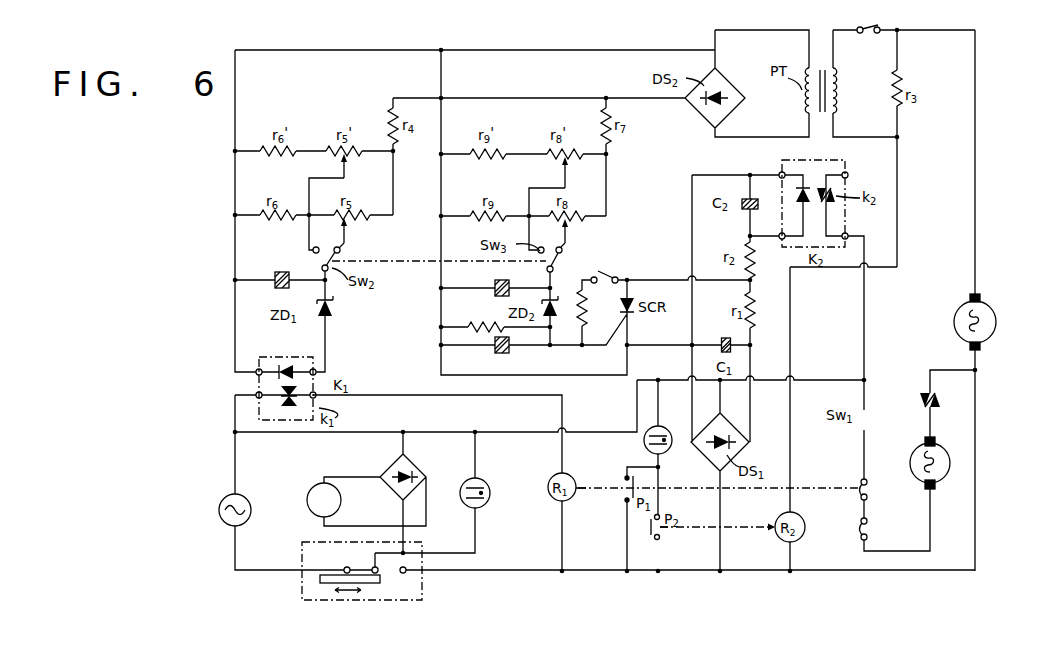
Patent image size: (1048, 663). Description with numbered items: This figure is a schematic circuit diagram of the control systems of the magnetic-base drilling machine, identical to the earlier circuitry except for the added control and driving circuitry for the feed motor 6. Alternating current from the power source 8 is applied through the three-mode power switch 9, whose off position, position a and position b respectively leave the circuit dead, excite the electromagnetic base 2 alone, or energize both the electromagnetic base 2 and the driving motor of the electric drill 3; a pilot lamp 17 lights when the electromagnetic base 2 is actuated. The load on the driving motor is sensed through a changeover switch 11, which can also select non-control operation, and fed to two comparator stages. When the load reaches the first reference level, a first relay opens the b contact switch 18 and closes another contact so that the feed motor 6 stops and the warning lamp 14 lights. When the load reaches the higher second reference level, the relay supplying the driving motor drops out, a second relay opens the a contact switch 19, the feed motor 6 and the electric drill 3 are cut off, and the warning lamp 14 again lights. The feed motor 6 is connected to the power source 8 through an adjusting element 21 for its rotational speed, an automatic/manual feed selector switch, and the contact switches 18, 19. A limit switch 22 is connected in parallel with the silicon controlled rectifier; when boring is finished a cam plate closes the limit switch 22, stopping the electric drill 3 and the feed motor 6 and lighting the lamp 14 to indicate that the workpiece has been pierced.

The electromagnetic base 2 is at (307, 494).
The electric drill 3 is at (996, 322).
The feed motor 6 is at (941, 480).
The power source 8 is at (219, 498).
The power switch 9 is at (357, 603).
The changeover switch 11 is at (868, 27).
The warning lamp 14 is at (667, 447).
The pilot lamp 17 is at (484, 493).
The b contact switch 18 is at (875, 489).
The a contact switch 19 is at (875, 529).
The adjusting element 21 is at (922, 398).
The limit switch 22 is at (609, 268).